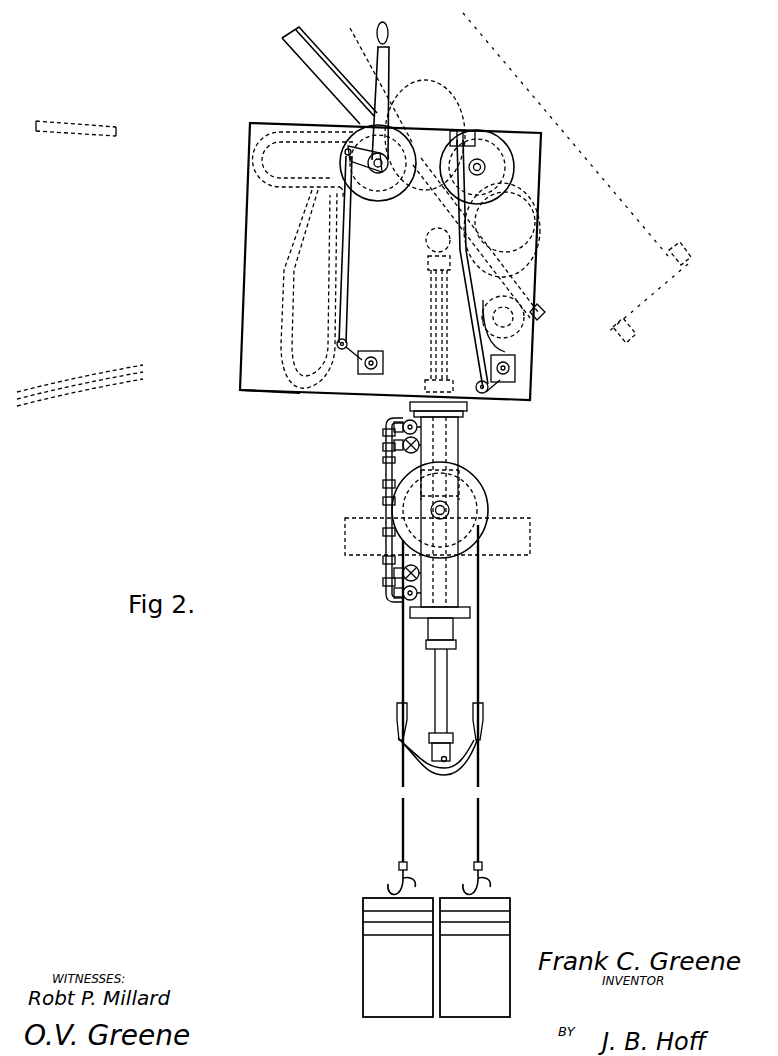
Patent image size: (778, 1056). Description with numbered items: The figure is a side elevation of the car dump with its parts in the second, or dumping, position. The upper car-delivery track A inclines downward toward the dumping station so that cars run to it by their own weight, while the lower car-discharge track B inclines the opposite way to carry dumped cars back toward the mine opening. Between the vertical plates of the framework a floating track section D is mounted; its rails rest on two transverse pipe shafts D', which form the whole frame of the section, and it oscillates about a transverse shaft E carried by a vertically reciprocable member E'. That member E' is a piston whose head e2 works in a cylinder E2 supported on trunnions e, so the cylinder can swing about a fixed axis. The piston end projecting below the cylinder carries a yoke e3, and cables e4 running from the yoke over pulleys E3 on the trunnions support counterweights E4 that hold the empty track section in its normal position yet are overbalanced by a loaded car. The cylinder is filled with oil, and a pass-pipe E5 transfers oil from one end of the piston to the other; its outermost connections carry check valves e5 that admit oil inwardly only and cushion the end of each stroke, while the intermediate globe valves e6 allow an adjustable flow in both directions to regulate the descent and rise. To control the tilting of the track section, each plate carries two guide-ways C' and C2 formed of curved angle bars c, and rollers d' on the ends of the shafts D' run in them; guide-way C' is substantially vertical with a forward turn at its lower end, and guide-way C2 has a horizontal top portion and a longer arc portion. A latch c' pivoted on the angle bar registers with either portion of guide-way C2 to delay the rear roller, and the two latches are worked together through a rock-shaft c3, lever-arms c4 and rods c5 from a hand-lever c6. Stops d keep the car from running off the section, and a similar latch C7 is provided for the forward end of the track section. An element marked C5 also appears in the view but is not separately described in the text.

The car-delivery track A is at (78, 119).
The car-discharge track B is at (112, 384).
The floating track section D is at (317, 75).
The guide-shafts D' is at (582, 173).
The angle bars c is at (409, 260).
The latch section c' is at (301, 206).
The guide-way C' is at (522, 266).
The guide-way C2 is at (389, 162).
The rock-shaft c3 is at (373, 375).
The lever-arms c4 is at (345, 396).
The rods c5 is at (346, 244).
The gear wheel C5 is at (462, 154).
The hand-lever c6 is at (392, 50).
The latch C7 is at (500, 178).
The stops d is at (521, 307).
The guide-rollers d' is at (507, 269).
The shaft E is at (410, 252).
The vertically reciprocable member E' is at (415, 331).
The cylinder E2 is at (468, 440).
The pulleys E3 is at (490, 492).
The counterweights E4 is at (436, 957).
The pass-pipe E5 is at (396, 470).
The trunnions e is at (455, 510).
The piston head e2 is at (450, 488).
The yoke e3 is at (428, 775).
The cables e4 is at (405, 840).
The check valves e5 is at (402, 416).
The globe valves e6 is at (400, 458).